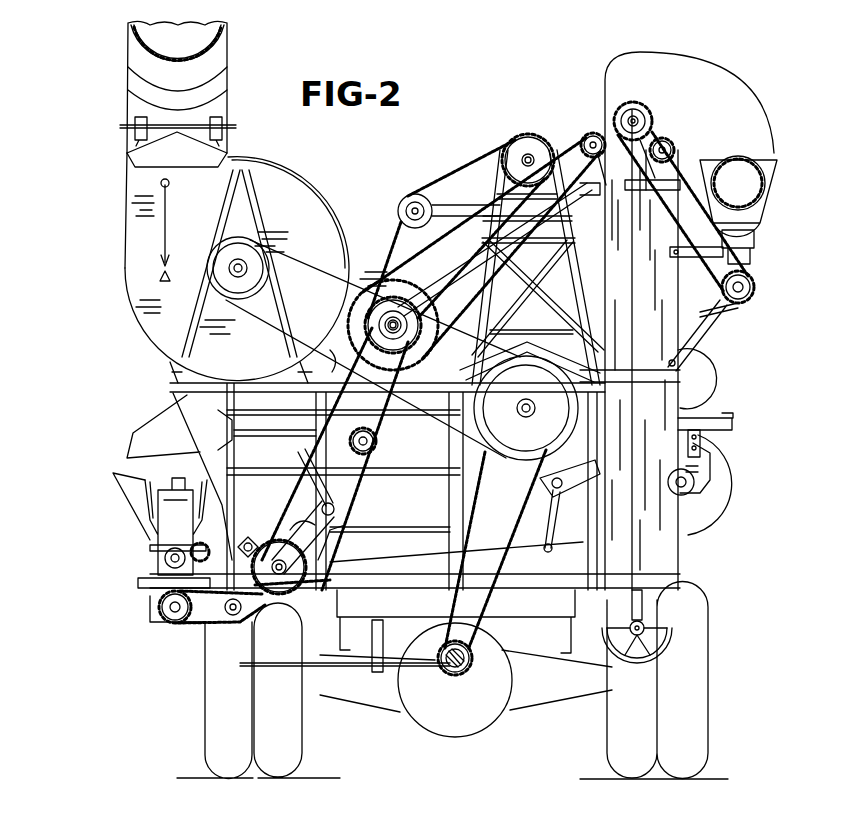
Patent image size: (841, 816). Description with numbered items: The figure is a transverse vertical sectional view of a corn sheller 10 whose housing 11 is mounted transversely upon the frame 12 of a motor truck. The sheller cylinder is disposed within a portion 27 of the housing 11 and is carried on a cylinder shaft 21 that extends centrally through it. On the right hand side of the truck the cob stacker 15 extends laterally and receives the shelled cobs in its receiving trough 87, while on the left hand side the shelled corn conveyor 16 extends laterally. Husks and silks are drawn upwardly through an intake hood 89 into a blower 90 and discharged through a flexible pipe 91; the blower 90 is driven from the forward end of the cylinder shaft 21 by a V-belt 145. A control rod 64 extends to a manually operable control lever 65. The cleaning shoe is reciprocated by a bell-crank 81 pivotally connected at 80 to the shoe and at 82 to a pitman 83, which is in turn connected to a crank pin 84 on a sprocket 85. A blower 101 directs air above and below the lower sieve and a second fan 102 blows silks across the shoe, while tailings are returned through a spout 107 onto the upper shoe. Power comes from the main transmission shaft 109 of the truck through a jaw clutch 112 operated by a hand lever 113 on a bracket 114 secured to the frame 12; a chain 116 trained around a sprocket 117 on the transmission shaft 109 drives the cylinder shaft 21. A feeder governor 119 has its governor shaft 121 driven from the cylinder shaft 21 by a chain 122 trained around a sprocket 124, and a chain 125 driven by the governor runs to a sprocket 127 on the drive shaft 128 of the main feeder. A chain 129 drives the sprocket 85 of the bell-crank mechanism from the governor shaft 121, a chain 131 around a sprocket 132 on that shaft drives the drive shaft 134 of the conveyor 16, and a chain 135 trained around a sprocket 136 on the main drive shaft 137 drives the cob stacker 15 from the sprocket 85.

The corn sheller 10 is at (118, 414).
The housing 11 is at (198, 440).
The frame 12 is at (552, 622).
The cob stacker 15 is at (128, 530).
The shelled corn conveyor 16 is at (778, 218).
The cylinder shaft 21 is at (533, 413).
The portion of the main housing 27 is at (547, 342).
The control rod 64 is at (307, 421).
The control lever 65 is at (222, 426).
The pivotal connection 80 is at (300, 460).
The bell-crank 81 is at (325, 500).
The pivotal connection 82 is at (382, 523).
The pitman 83 is at (292, 530).
The crank pin 84 is at (283, 590).
The sprocket 85 is at (320, 569).
The receiving trough 87 is at (148, 480).
The intake hood 89 is at (182, 376).
The blower 90 is at (256, 267).
The flexible pipe 91 is at (130, 70).
The blower 101 is at (712, 482).
The second fan 102 is at (700, 359).
The spout 107 is at (332, 352).
The main transmission shaft 109 is at (462, 688).
The jaw clutch 112 is at (438, 682).
The hand lever 113 is at (292, 667).
The bracket 114 is at (382, 668).
The chain 116 is at (482, 520).
The sprocket 117 is at (450, 640).
The feeder governor 119 is at (366, 292).
The governor shaft 121 is at (402, 312).
The chain 122 is at (378, 441).
The sprocket 124 is at (380, 325).
The chain 125 is at (447, 186).
The sprocket 127 is at (521, 150).
The drive shaft 128 is at (535, 156).
The chain 129 is at (400, 492).
The chain 131 is at (506, 270).
The sprocket 132 is at (441, 282).
The drive shaft 134 is at (632, 112).
The chain 135 is at (208, 632).
The sprocket 136 is at (160, 606).
The main drive shaft 137 is at (172, 616).
The V-belt 145 is at (290, 252).